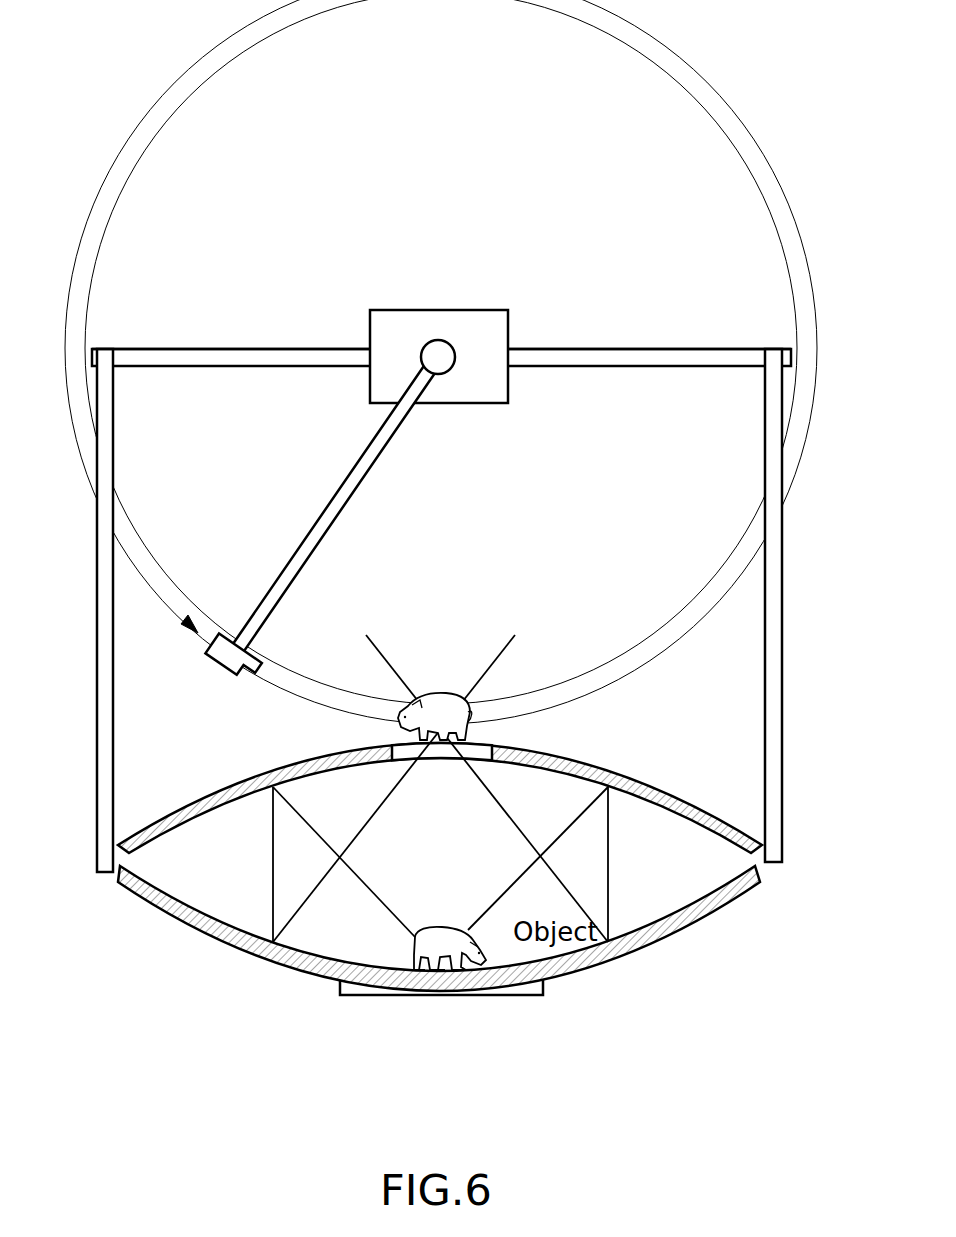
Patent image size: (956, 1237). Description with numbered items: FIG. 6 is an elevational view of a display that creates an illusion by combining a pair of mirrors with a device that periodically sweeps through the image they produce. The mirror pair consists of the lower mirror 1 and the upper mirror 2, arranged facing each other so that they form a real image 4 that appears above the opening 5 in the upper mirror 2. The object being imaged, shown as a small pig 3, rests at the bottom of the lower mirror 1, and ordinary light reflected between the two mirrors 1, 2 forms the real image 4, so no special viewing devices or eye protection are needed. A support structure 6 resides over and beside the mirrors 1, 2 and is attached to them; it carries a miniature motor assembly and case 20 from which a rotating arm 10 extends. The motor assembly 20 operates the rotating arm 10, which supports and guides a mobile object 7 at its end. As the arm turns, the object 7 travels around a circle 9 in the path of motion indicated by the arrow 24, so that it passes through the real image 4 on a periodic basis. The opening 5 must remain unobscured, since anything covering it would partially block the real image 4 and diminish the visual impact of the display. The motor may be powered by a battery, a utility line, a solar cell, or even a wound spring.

The lower mirror 1 is at (597, 960).
The upper mirror 2 is at (637, 766).
The object 3 is at (412, 936).
The real image 4 is at (440, 695).
The opening 5 is at (448, 758).
The support structure 6 is at (97, 612).
The object 7 is at (222, 676).
The circular track 9 is at (745, 535).
The rotating arm 10 is at (369, 487).
The miniature motor assembly and case 20 is at (465, 310).
The rotation direction arrow 24 is at (132, 567).